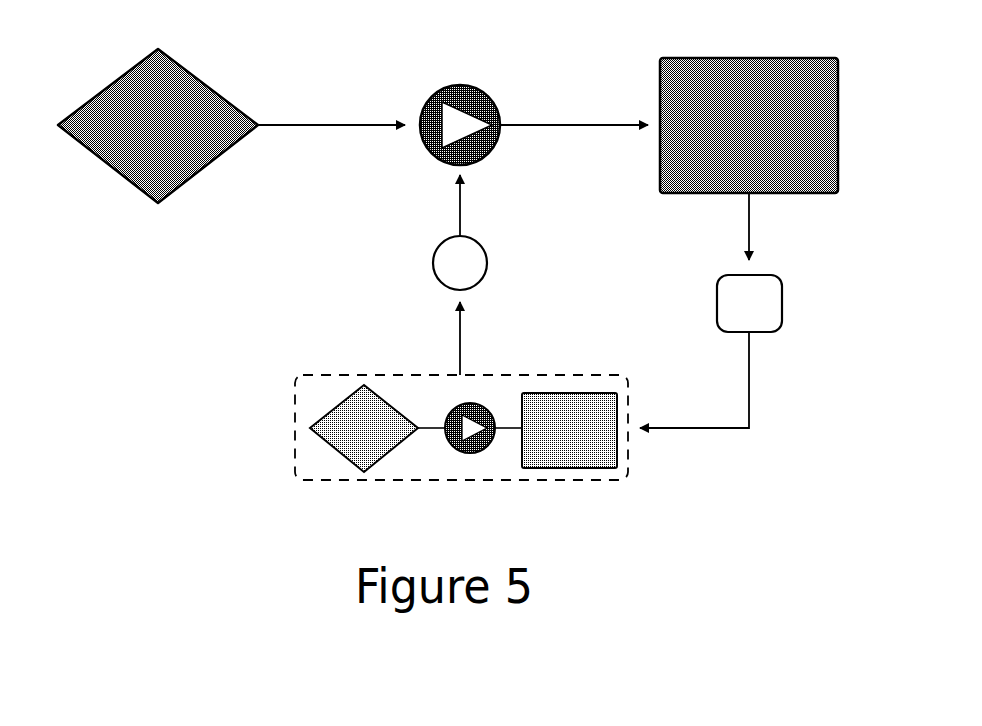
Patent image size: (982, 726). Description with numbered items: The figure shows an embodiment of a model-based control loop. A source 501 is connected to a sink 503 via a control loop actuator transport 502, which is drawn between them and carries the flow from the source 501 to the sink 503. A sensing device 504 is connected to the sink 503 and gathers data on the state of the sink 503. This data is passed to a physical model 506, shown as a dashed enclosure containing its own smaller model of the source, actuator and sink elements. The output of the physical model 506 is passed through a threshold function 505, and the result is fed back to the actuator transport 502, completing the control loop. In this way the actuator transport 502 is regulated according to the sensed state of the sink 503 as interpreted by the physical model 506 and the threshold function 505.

The source 501 is at (110, 70).
The control loop actuator transport 502 is at (438, 87).
The sink 503 is at (757, 52).
The sensing device 504 is at (787, 300).
The threshold function 505 is at (425, 255).
The physical model 506 is at (310, 368).